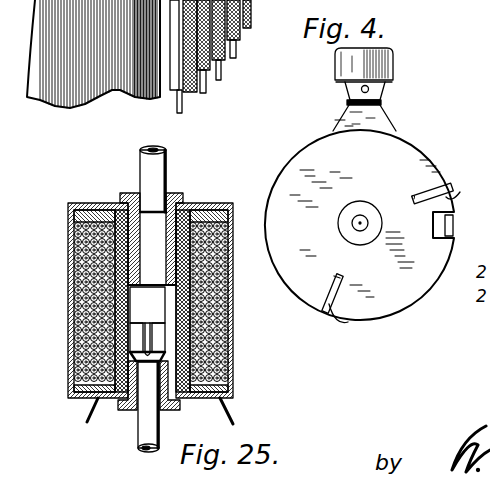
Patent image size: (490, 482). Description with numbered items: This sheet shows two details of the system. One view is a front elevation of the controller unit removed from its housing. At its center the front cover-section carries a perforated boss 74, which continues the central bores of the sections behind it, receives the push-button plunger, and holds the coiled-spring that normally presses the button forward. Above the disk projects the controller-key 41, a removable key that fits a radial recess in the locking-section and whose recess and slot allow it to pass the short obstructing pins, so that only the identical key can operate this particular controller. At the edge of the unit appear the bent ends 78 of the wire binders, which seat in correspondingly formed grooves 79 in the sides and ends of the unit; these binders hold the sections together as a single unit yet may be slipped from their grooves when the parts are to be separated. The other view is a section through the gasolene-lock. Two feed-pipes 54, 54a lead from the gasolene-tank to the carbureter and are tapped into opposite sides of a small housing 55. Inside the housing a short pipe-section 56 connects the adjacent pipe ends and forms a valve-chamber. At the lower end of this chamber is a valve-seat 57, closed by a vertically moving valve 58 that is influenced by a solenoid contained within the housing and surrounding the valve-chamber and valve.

In FIG. 4, the controller-key 41 is at (378, 122).
In FIG. 4, the perforated boss 74 is at (370, 209).
In FIG. 4, the bent ends of binders 78 is at (438, 190).
In FIG. 4, the grooves 79 is at (409, 263).
In FIG. 25, the inlet or feed-pipe 54 is at (163, 177).
In FIG. 25, the inlet or feed-pipe 54a is at (139, 432).
In FIG. 25, the housing 55 is at (70, 252).
In FIG. 25, the pipe-section 56 is at (193, 208).
In FIG. 25, the valve-seat 57 is at (147, 366).
In FIG. 25, the valve 58 is at (134, 344).